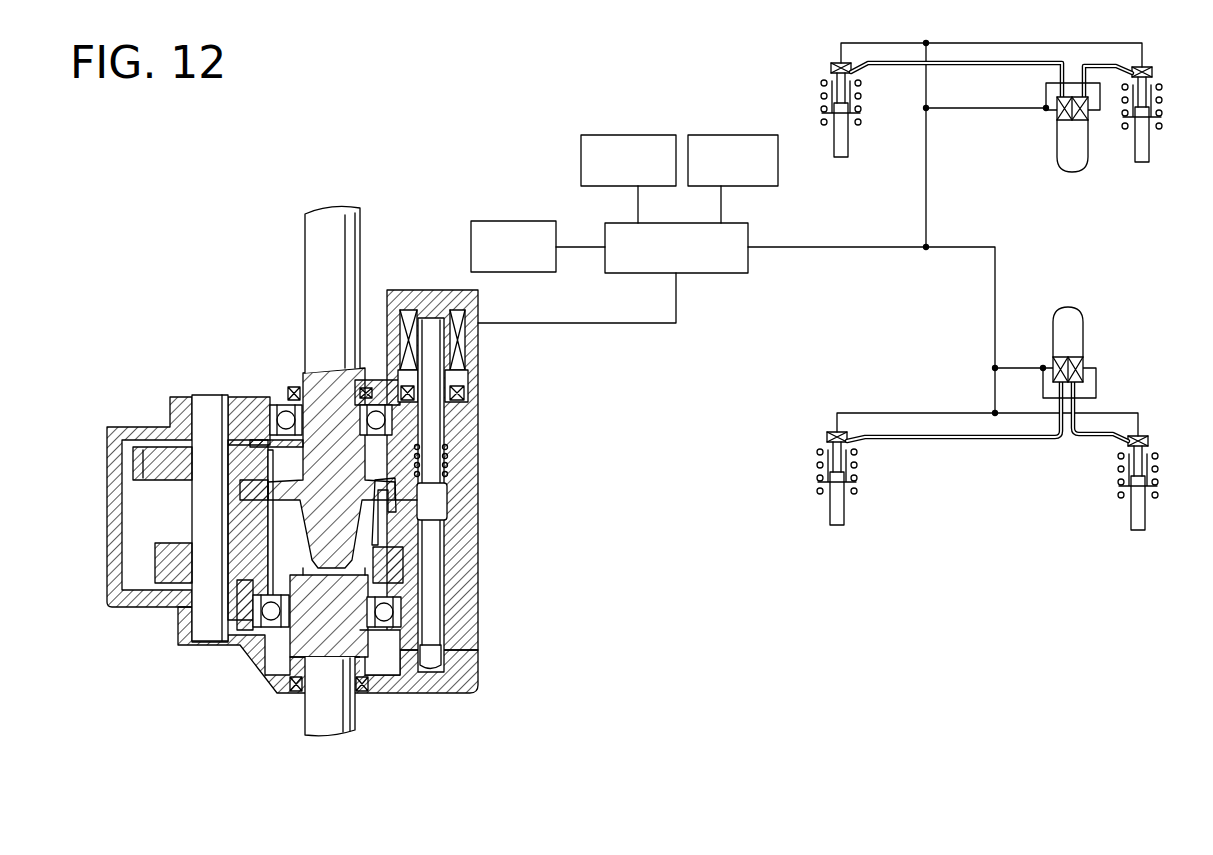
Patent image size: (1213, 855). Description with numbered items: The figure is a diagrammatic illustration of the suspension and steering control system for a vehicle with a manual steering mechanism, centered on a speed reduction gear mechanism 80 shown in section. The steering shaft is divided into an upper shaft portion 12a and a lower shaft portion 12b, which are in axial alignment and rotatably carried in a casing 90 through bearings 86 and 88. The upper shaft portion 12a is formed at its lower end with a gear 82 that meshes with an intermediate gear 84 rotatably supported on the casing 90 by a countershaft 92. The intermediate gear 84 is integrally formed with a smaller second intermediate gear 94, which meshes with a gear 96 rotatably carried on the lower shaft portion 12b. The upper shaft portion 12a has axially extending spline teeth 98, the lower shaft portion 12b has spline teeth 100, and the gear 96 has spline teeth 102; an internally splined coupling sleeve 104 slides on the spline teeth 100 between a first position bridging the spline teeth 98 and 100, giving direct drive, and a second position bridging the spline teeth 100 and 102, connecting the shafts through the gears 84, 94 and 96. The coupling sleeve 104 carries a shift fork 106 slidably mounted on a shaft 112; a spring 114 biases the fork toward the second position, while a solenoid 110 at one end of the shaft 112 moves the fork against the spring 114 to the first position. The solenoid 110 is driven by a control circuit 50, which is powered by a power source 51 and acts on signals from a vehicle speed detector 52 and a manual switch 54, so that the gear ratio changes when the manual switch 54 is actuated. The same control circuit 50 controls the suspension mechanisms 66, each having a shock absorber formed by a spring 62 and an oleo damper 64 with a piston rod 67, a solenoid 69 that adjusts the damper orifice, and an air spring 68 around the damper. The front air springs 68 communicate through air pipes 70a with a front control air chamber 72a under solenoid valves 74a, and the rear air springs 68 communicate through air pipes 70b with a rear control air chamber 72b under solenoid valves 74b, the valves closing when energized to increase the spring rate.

The upper shaft portion 12a is at (363, 258).
The lower shaft portion 12b is at (308, 724).
The control circuit 50 is at (608, 222).
The power source 51 is at (722, 134).
The vehicle speed detector 52 is at (625, 134).
The manual switch 54 is at (495, 220).
The spring 62 is at (862, 120).
The oleo damper 64 is at (849, 150).
The suspension mechanism 66 is at (812, 94).
The piston rod 67 is at (830, 108).
The air spring 68 is at (858, 100).
The solenoid 69 is at (830, 64).
The air pipe 70a is at (937, 440).
The air pipe 70b is at (1088, 62).
The front control air chamber 72a is at (1079, 322).
The rear control air chamber 72b is at (1062, 150).
The solenoid valve 74a is at (1083, 365).
The solenoid valve 74b is at (1058, 118).
The speed reduction gear mechanism 80 is at (192, 382).
The gear 82 is at (428, 476).
The intermediate gear 84 is at (252, 440).
The bearing 86 is at (286, 402).
The bearing 88 is at (265, 660).
The casing 90 is at (170, 418).
The countershaft 92 is at (205, 605).
The second intermediate gear 94 is at (160, 560).
The gear 96 is at (403, 565).
The spline teeth 98 is at (250, 497).
The spline teeth 100 is at (250, 520).
The spline teeth 102 is at (250, 545).
The coupling sleeve 104 is at (397, 512).
The shift fork 106 is at (447, 498).
The solenoid 110 is at (458, 335).
The shaft 112 is at (445, 436).
The spring 114 is at (450, 462).